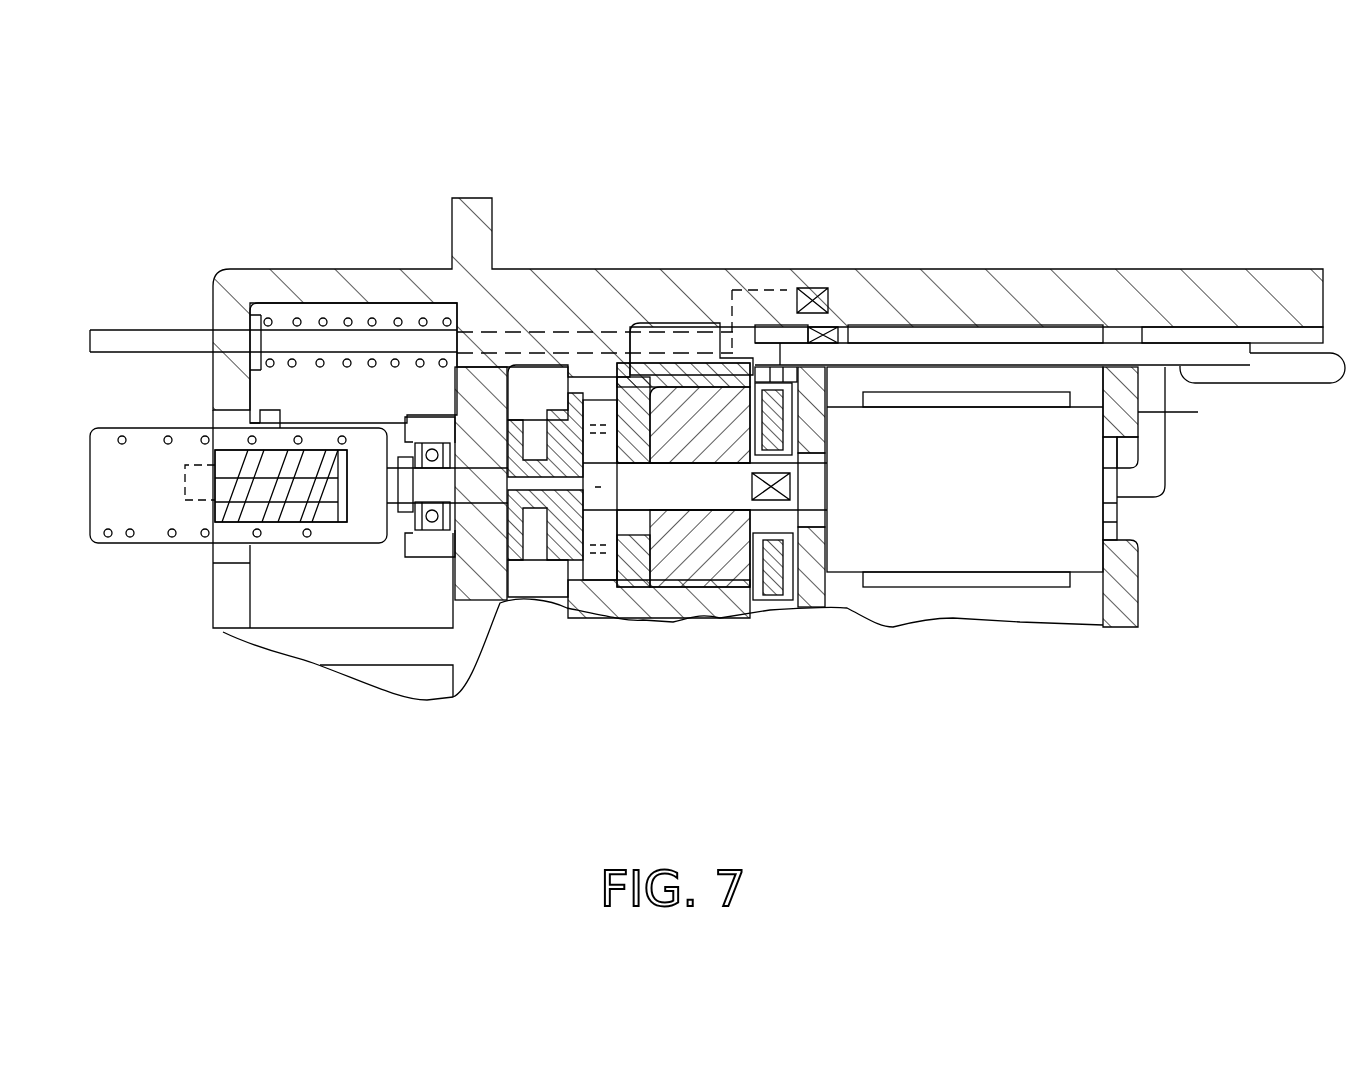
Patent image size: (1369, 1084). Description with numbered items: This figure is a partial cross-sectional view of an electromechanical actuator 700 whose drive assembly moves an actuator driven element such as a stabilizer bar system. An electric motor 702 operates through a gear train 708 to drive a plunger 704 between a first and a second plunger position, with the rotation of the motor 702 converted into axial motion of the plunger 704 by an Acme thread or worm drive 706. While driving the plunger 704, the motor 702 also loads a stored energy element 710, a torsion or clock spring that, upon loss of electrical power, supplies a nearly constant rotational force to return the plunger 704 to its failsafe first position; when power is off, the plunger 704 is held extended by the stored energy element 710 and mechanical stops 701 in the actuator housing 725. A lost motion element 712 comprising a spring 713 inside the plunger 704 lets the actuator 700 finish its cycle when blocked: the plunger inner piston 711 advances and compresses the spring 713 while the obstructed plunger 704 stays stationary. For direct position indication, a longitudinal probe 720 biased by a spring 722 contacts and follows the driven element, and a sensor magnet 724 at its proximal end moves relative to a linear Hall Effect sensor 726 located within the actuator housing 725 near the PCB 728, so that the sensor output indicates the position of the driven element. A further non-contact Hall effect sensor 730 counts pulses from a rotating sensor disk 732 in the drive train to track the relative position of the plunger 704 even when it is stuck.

The electromechanical actuator 700 is at (1090, 126).
The mechanical stops 701 is at (263, 565).
The electric motor 702 is at (903, 557).
The plunger 704 is at (120, 543).
The worm drive 706 is at (468, 483).
The gear train 708 is at (600, 410).
The stored energy element 710 is at (687, 565).
The plunger inner piston 711 is at (347, 510).
The lost motion element 712 is at (349, 558).
The spring 713 is at (320, 512).
The probe 720 is at (150, 327).
The spring 722 is at (298, 318).
The sensor magnet 724 is at (815, 287).
The actuator housing 725 is at (427, 287).
The linear Hall Effect sensor 726 is at (830, 330).
The PCB 728 is at (1072, 347).
The Hall effect sensor 730 is at (778, 363).
The sensor disk 732 is at (773, 583).